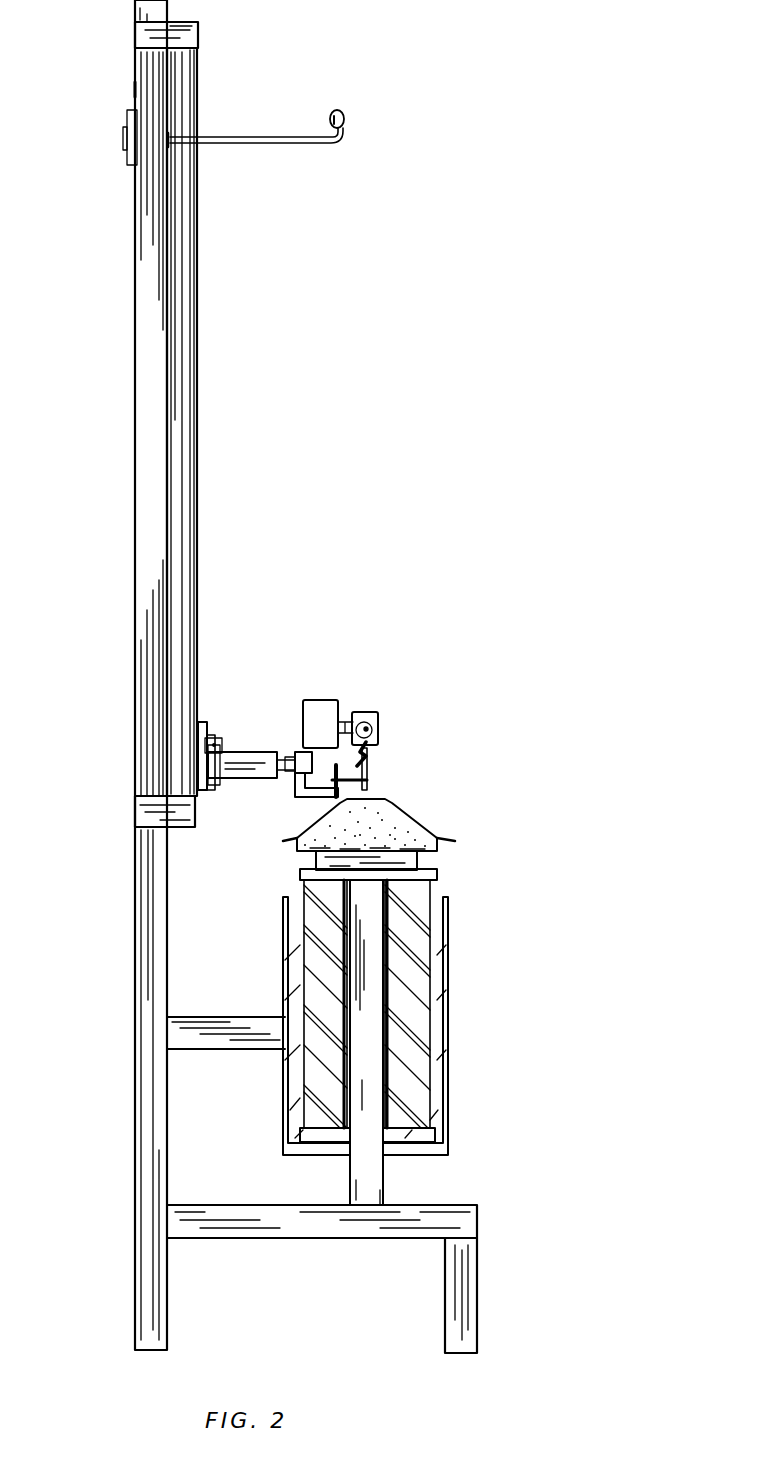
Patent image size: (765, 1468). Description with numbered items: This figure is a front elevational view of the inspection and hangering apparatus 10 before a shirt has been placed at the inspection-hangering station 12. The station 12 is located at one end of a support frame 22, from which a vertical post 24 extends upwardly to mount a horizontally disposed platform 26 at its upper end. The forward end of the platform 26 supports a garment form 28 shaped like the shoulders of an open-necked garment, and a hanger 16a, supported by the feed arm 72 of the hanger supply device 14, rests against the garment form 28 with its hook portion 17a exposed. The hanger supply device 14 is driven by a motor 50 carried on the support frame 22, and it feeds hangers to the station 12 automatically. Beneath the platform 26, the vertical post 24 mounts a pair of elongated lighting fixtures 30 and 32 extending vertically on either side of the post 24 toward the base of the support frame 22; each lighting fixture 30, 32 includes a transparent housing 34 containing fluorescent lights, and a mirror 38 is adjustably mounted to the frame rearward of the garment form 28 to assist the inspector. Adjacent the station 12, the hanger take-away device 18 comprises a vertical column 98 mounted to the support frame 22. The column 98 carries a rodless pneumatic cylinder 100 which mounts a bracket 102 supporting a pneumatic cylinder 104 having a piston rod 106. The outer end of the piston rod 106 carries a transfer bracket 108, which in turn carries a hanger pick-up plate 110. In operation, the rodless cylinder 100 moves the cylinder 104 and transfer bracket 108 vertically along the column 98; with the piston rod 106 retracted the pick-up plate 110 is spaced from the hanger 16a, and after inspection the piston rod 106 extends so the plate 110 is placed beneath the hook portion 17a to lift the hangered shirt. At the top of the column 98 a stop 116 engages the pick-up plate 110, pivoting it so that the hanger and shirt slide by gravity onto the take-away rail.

The inspection and hangering apparatus 10 is at (433, 273).
The inspection-hangering station 12 is at (422, 833).
The hanger supply device 14 is at (403, 727).
The hanger 16a is at (456, 840).
The hook portion 17a is at (368, 768).
The hanger take-away device 18 is at (234, 683).
The support frame 22 is at (265, 1243).
The vertical post 24 is at (390, 1188).
The platform 26 is at (318, 866).
The garment form 28 is at (396, 826).
The lighting fixture 30 is at (323, 1022).
The lighting fixture 32 is at (414, 1046).
The transparent housing 34 is at (452, 1076).
The mirror 38 is at (449, 1108).
The motor 50 is at (380, 714).
The feed arm 72 is at (371, 754).
The vertical column 98 is at (148, 416).
The rodless pneumatic cylinder 100 is at (198, 407).
The bracket 102 is at (204, 725).
The pneumatic cylinder 104 is at (248, 778).
The piston rod 106 is at (288, 756).
The transfer bracket 108 is at (300, 798).
The hanger pick-up plate 110 is at (350, 789).
The stop 116 is at (345, 112).